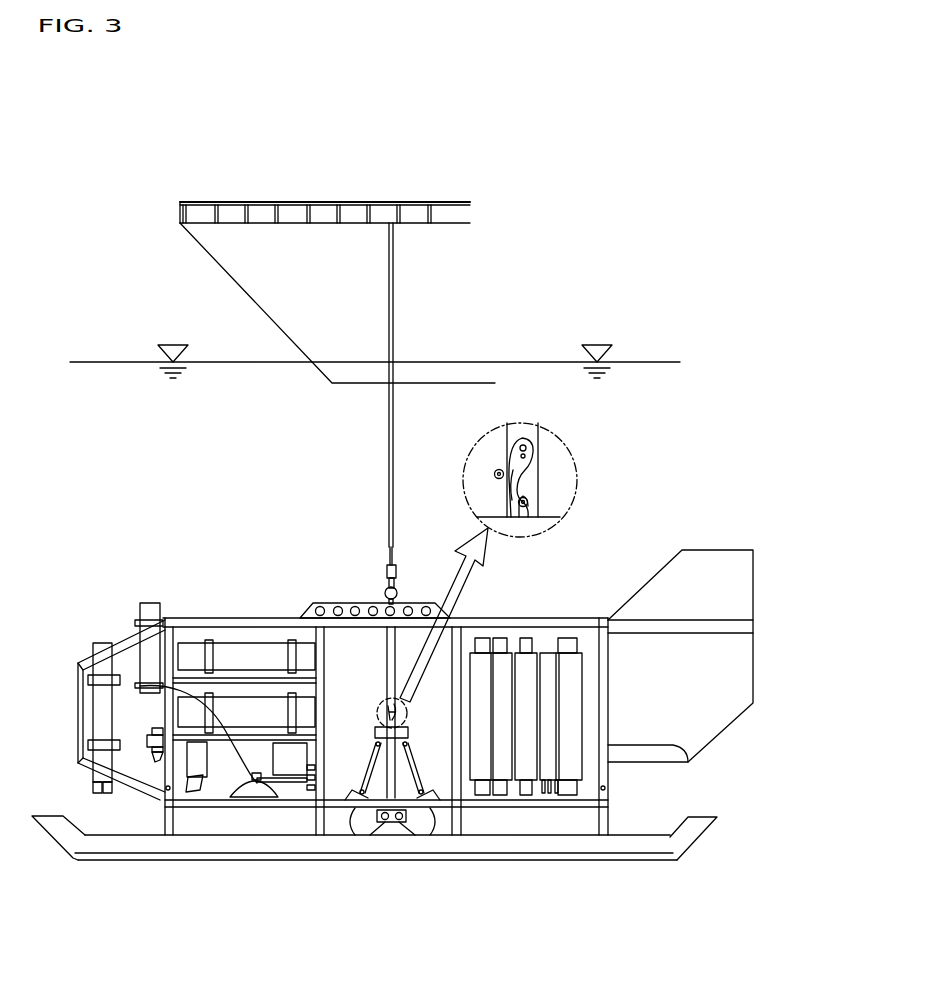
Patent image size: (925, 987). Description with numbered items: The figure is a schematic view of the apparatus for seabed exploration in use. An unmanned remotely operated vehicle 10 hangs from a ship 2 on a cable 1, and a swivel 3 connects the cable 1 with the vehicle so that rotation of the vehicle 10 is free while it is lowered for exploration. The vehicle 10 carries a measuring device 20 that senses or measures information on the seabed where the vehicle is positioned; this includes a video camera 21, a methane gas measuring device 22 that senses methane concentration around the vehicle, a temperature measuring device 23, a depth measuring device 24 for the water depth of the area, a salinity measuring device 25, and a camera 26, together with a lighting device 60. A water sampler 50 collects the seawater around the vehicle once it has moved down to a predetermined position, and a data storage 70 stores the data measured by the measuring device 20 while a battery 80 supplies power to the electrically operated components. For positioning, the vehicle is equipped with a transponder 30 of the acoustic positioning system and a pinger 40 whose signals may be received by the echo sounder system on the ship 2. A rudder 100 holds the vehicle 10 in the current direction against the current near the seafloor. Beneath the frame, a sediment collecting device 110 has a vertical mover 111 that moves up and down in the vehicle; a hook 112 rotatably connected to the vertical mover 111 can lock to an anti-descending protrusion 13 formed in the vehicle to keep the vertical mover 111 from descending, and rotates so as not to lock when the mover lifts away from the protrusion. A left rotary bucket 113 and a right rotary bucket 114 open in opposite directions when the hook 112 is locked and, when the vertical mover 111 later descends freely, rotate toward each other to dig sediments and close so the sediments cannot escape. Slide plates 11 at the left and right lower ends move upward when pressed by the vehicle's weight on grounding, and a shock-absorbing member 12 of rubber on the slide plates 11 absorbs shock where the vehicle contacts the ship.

The cable 1 is at (393, 545).
The ship 2 is at (228, 255).
The swivel 3 is at (382, 566).
The unmanned remotely operated vehicle 10 is at (595, 550).
The slide plate 11 is at (56, 816).
The shock-absorbing member 12 is at (78, 864).
The anti-descending protrusion 13 is at (527, 455).
The measuring device 20 is at (125, 903).
The video camera 21 is at (158, 757).
The methane gas measuring device 22 is at (148, 737).
The temperature measuring device 23 is at (542, 793).
The depth measuring device 24 is at (550, 793).
The salinity measuring device 25 is at (556, 793).
The camera 26 is at (292, 784).
The transponder 30 is at (150, 603).
The pinger 40 is at (101, 643).
The water sampler 50 is at (485, 660).
The lighting device 60 is at (192, 757).
The data storage 70 is at (228, 652).
The battery 80 is at (264, 710).
The rudder 100 is at (694, 551).
The sediment collecting device 110 is at (421, 708).
The vertical mover 111 is at (377, 712).
The hook 112 is at (512, 466).
The left rotary bucket 113 is at (355, 840).
The right rotary bucket 114 is at (430, 840).